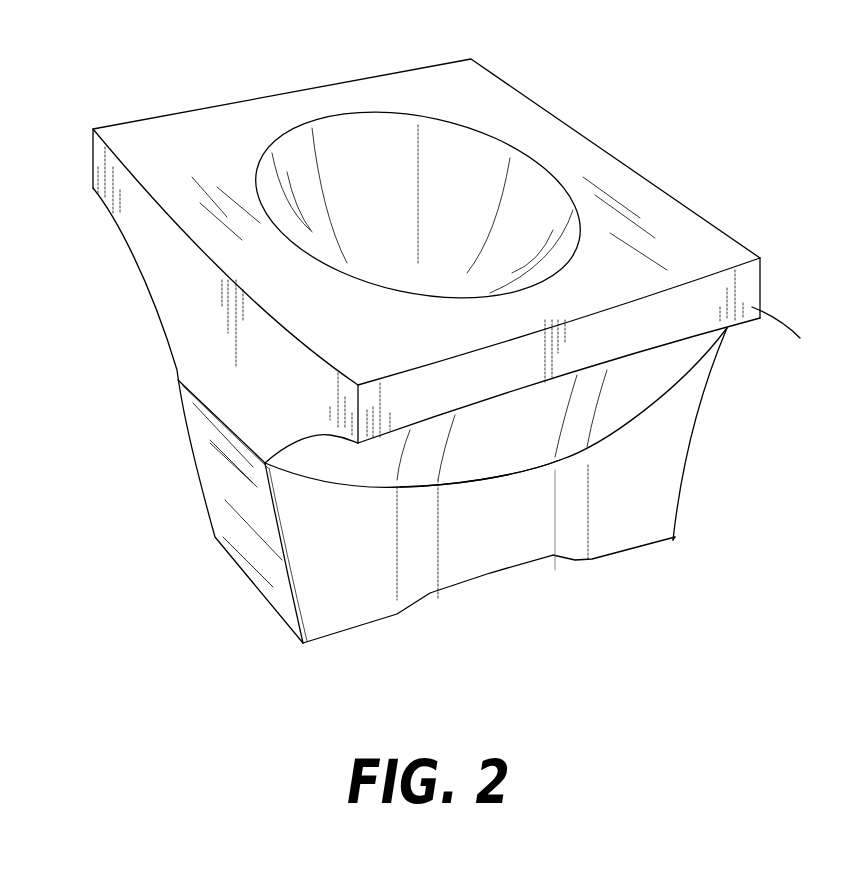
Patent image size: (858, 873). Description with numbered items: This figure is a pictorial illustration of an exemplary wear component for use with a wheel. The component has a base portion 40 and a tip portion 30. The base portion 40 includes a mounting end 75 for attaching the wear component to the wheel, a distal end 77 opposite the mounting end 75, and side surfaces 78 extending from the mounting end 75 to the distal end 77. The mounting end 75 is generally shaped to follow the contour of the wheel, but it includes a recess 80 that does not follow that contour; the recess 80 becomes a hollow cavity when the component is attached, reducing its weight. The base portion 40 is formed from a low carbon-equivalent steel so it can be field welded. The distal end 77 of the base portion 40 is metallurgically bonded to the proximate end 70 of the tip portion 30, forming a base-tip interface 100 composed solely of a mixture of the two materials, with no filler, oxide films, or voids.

The tip portion 30 is at (663, 508).
The base portion 40 is at (748, 282).
The proximate end 70 is at (490, 482).
The mounting end 75 is at (138, 168).
The distal end 77 is at (490, 482).
The side surfaces 78 is at (703, 352).
The recess 80 is at (555, 203).
The base-tip interface 100 is at (200, 402).